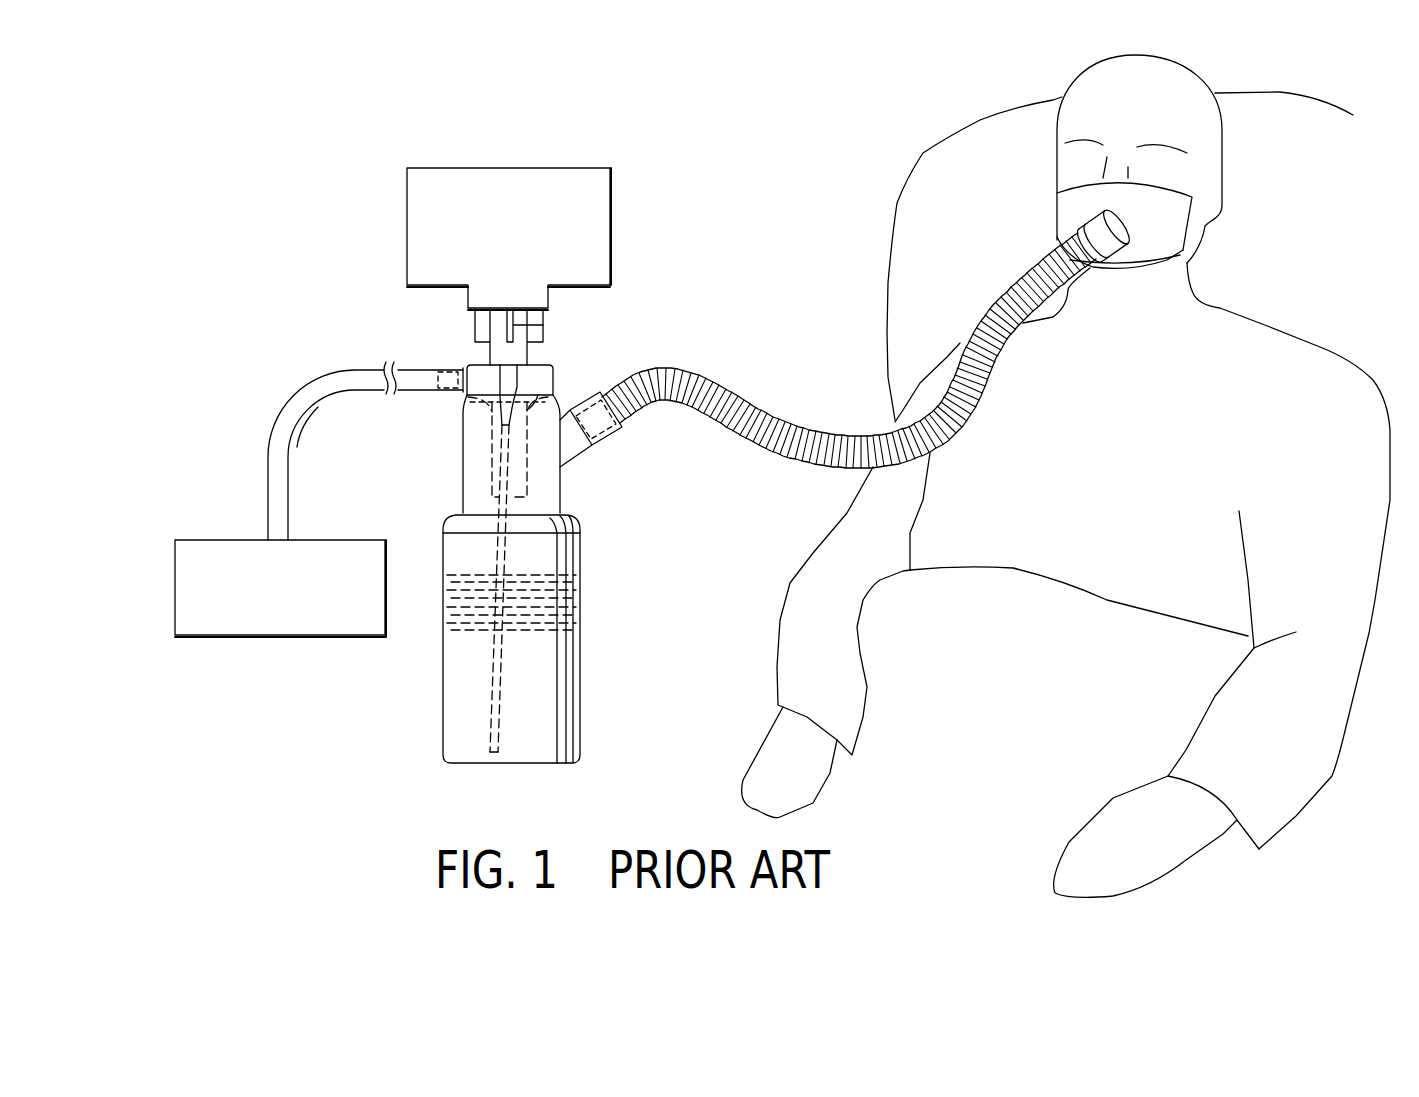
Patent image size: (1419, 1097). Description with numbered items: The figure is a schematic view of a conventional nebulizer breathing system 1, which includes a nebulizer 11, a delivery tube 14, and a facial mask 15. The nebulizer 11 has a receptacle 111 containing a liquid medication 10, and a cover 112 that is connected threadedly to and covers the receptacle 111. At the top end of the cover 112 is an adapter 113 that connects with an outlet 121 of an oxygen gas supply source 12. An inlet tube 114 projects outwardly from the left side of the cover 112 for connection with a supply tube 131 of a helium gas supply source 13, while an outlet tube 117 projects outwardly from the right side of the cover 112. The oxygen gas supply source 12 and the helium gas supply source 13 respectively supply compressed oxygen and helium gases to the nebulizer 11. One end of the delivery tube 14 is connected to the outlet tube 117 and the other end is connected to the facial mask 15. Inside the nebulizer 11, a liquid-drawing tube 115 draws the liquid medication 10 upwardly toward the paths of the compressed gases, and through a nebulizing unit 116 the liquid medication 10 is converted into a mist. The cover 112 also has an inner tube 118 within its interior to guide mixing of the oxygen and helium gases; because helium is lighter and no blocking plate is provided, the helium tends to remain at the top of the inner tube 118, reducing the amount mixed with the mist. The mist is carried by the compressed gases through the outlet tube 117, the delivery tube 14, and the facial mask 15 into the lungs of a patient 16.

The nebulizer breathing system 1 is at (322, 268).
The liquid medication 10 is at (546, 606).
The nebulizer 11 is at (556, 368).
The oxygen gas supply source 12 is at (507, 168).
The helium gas supply source 13 is at (277, 623).
The delivery tube 14 is at (745, 400).
The facial mask 15 is at (1073, 217).
The patient 16 is at (1215, 337).
The receptacle 111 is at (580, 651).
The cover 112 is at (462, 458).
The adapter 113 is at (513, 327).
The inlet tube 114 is at (460, 365).
The liquid-drawing tube 115 is at (493, 722).
The nebulizing unit 116 is at (497, 412).
The outlet tube 117 is at (570, 452).
The inner tube 118 is at (490, 475).
The outlet 121 is at (467, 318).
The supply tube 131 is at (385, 366).